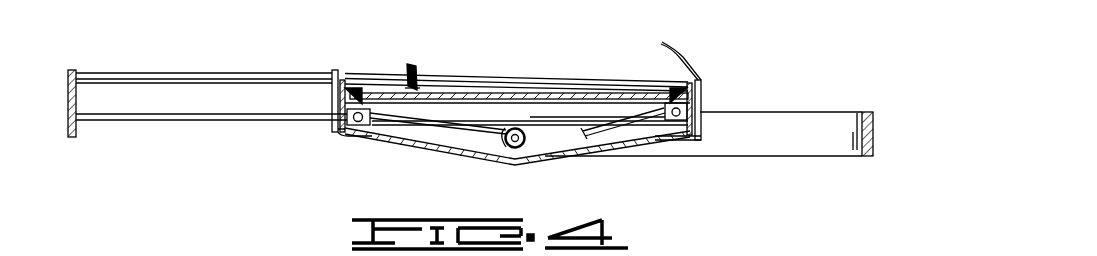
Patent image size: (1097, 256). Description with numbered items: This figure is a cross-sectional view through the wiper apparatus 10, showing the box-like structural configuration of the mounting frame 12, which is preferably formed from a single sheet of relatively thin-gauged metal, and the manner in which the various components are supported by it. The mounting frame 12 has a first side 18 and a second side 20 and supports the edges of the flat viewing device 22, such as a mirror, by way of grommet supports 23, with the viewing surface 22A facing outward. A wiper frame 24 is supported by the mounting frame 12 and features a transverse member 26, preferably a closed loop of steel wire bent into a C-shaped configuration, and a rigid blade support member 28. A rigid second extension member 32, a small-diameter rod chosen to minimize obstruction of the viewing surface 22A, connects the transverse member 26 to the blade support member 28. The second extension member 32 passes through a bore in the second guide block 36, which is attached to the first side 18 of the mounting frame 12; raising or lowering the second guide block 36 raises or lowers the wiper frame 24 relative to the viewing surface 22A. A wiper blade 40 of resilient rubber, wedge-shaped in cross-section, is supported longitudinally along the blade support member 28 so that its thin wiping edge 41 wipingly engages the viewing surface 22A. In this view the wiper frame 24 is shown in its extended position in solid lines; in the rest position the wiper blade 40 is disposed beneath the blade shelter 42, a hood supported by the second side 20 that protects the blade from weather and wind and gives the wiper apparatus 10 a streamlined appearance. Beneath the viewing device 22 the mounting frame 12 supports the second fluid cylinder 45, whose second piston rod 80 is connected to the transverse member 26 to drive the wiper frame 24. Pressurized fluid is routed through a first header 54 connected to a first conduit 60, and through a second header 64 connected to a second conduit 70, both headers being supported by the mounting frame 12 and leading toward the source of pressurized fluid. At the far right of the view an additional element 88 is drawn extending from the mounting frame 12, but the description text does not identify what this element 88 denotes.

The wiper apparatus 10 is at (398, 60).
The mounting frame 12 is at (464, 160).
The first side 18 is at (337, 132).
The second side 20 is at (702, 88).
The viewing device 22 is at (565, 82).
The viewing surface 22A is at (512, 96).
The grommet supports 23 is at (352, 88).
The wiper frame 24 is at (331, 69).
The transverse member 26 is at (77, 105).
The blade support member 28 is at (414, 67).
The second extension member 32 is at (196, 76).
The second guide block 36 is at (333, 90).
The wiper blade 40 is at (415, 91).
The wiping edge 41 is at (423, 98).
The blade shelter 42 is at (673, 45).
The second fluid cylinder 45 is at (556, 113).
The first header 54 is at (360, 128).
The first conduit 60 is at (493, 131).
The second header 64 is at (702, 108).
The second conduit 70 is at (607, 122).
The second piston rod 80 is at (149, 118).
The right rail 88 is at (778, 112).